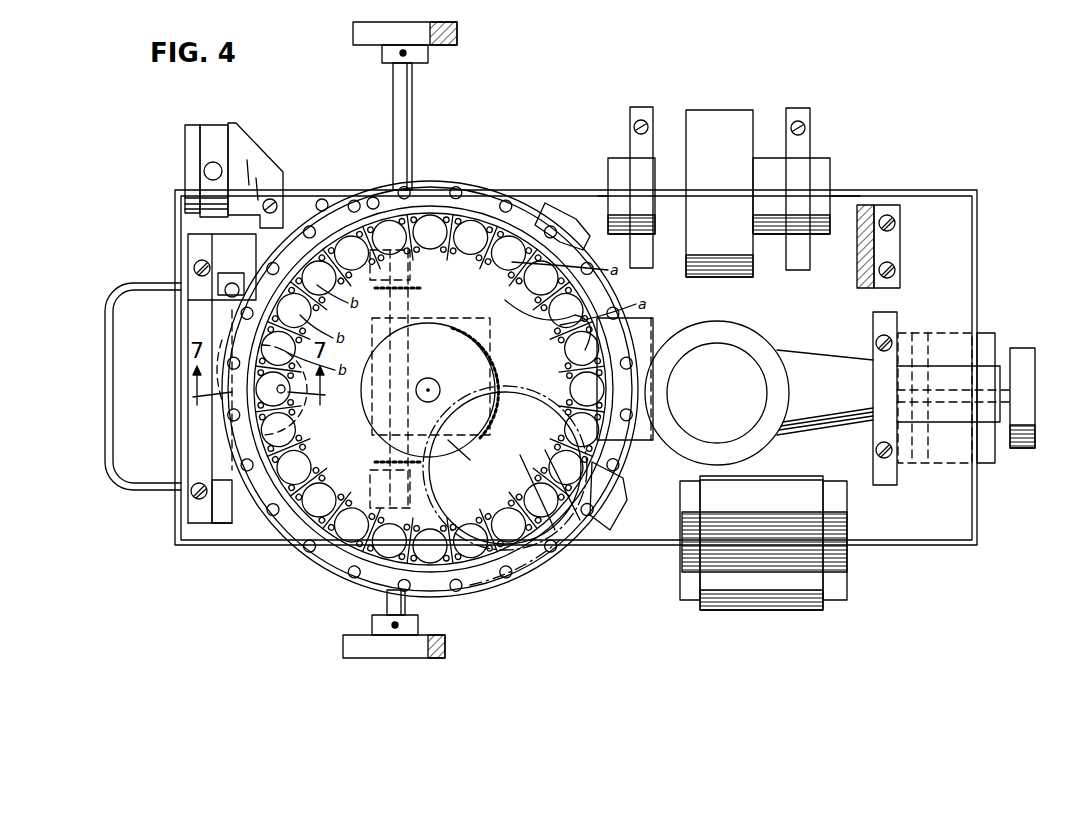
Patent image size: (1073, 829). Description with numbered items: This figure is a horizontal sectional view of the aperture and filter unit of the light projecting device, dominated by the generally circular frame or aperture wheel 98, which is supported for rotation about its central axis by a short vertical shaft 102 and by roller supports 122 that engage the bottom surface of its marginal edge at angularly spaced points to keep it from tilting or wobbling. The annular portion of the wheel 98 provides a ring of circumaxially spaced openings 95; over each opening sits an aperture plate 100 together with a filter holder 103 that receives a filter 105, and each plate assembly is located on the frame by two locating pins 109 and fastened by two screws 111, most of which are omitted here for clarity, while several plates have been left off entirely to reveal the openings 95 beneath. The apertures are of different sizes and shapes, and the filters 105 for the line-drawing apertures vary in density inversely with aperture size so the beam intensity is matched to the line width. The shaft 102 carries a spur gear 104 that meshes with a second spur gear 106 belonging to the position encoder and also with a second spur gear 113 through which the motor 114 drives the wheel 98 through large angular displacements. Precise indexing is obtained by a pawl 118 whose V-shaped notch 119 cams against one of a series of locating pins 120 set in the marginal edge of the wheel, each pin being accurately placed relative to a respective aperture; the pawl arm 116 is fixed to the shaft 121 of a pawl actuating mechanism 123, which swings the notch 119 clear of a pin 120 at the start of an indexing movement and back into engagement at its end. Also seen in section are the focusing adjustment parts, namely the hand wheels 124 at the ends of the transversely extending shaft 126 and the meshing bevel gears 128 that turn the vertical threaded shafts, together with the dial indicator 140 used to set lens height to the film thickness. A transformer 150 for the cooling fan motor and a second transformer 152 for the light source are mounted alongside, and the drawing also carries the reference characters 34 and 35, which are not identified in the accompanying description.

The handle 34 is at (188, 508).
The drive shaft 35 is at (873, 412).
The openings 95 is at (355, 490).
The aperture wheel 98 is at (447, 188).
The aperture plate 100 is at (429, 373).
The shaft 102 is at (435, 396).
The filter holder 103 is at (292, 393).
The spur gear 104 is at (430, 468).
The filter 105 is at (545, 322).
The second spur gear 106 is at (505, 572).
The locating pins 109 is at (556, 520).
The screws 111 is at (540, 500).
The second spur gear 113 is at (462, 442).
The motor 114 is at (470, 325).
The pawl arm 116 is at (222, 323).
The pawl 118 is at (284, 392).
The V-shaped notch 119 is at (225, 370).
The locating pins 120 is at (374, 205).
The shaft 121 is at (228, 288).
The roller supports 122 is at (556, 204).
The pawl actuating mechanism 123 is at (225, 250).
The hand wheels 124 is at (457, 32).
The shaft 126 is at (412, 102).
The bevel gears 128 is at (425, 268).
The dial indicator 140 is at (190, 160).
The transformer 150 is at (718, 110).
The second transformer 152 is at (735, 600).